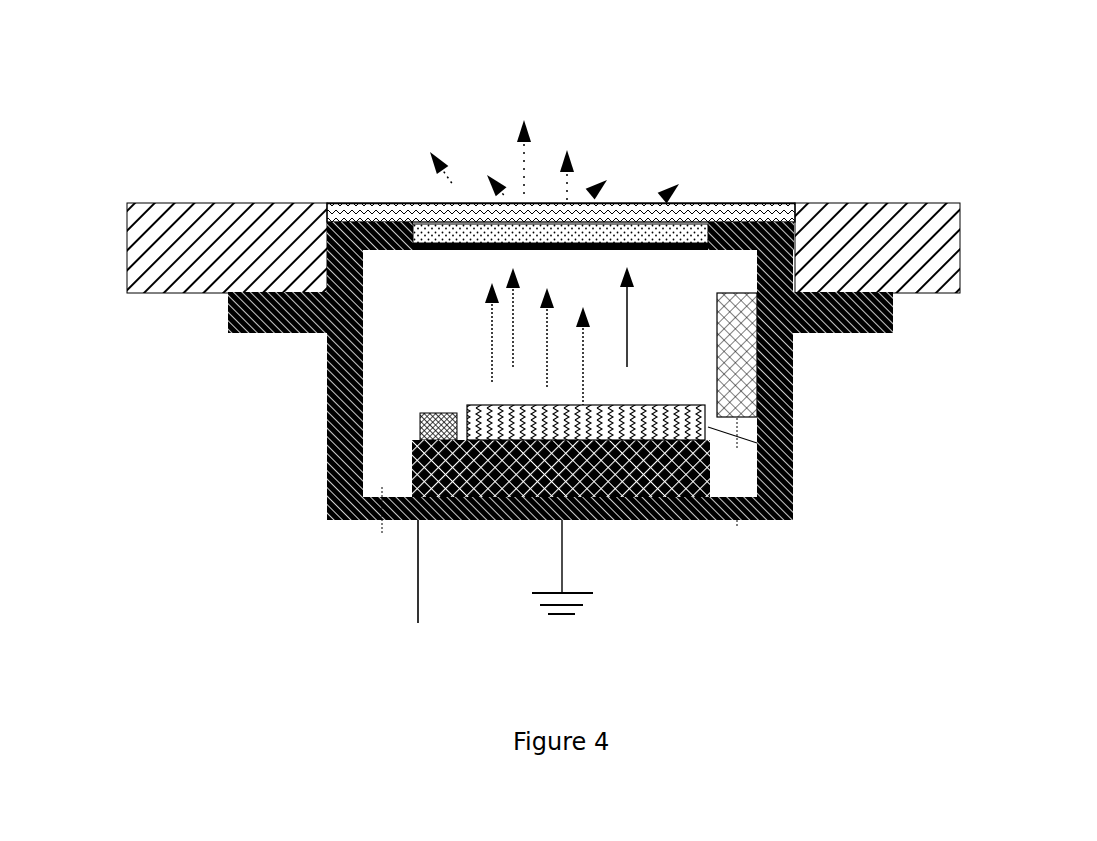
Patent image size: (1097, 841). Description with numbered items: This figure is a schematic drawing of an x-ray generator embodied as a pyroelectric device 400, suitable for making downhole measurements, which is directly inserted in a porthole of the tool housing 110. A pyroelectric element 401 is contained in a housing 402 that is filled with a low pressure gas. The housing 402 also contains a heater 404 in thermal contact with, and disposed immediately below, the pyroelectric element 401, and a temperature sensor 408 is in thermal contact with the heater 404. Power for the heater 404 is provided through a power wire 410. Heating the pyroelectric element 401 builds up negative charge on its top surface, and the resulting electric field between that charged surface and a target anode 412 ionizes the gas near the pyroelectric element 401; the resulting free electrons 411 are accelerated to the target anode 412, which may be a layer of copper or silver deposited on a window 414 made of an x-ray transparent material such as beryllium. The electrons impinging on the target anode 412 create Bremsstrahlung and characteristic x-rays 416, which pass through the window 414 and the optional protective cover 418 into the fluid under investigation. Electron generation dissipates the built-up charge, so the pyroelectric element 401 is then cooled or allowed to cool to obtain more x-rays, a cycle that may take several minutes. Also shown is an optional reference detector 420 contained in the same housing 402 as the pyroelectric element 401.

The tool housing 110 is at (898, 212).
The pyroelectric device 400 is at (845, 411).
The pyroelectric element 401 is at (793, 463).
The housing 402 is at (797, 503).
The heater 404 is at (327, 492).
The temperature sensor 408 is at (420, 419).
The power wire 410 is at (420, 588).
The free electrons 411 is at (492, 342).
The target anode 412 is at (413, 222).
The window 414 is at (698, 223).
The x-rays 416 is at (527, 170).
The protective cover 418 is at (684, 208).
The reference detector 420 is at (797, 364).